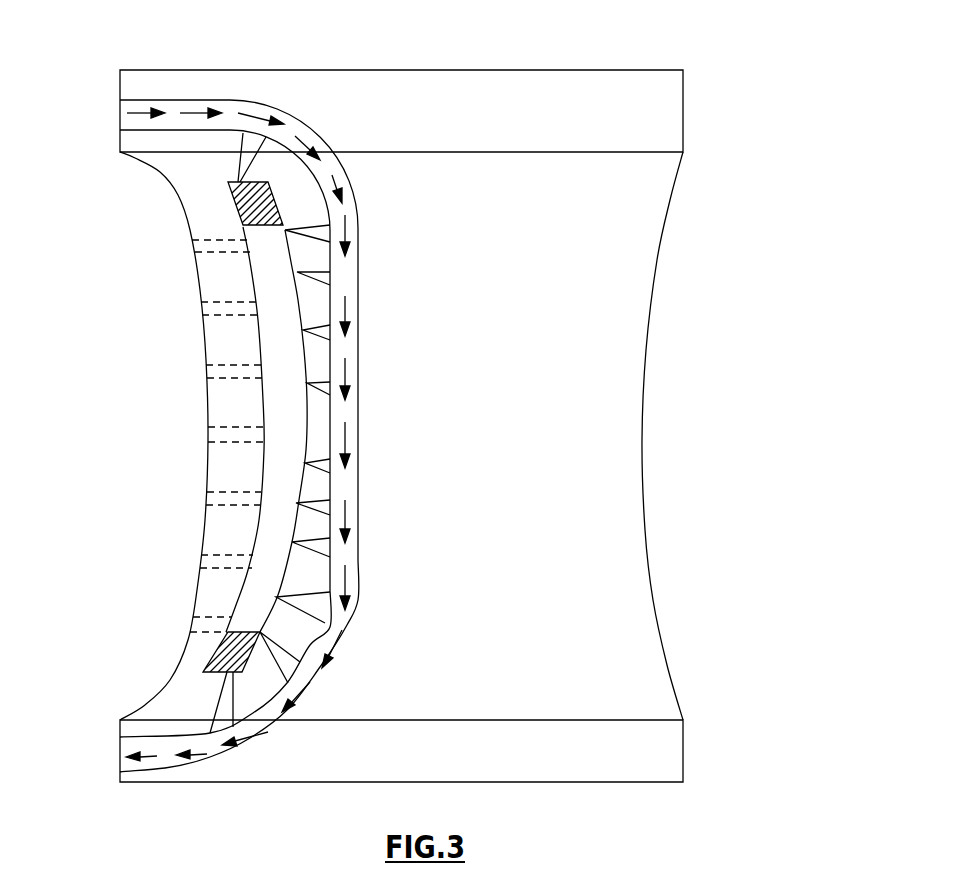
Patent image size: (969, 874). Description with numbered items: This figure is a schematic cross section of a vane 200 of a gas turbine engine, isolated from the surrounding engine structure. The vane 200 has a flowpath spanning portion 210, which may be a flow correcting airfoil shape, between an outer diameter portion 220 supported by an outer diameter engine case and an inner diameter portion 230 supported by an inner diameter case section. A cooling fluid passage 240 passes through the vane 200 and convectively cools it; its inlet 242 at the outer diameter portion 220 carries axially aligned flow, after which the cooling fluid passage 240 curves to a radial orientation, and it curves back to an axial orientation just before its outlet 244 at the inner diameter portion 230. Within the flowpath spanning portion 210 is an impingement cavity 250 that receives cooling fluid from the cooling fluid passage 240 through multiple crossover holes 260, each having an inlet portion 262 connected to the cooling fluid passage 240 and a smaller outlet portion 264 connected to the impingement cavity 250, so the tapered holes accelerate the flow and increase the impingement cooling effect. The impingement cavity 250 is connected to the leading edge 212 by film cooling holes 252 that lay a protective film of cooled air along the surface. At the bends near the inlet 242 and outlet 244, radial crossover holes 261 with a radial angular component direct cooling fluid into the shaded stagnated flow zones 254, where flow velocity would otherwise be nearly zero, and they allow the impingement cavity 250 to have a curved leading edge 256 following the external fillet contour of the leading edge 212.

The vane 200 is at (782, 77).
The flowpath spanning portion 210 is at (630, 445).
The leading edge 212 is at (183, 220).
The outer diameter portion 220 is at (447, 125).
The inner diameter portion 230 is at (447, 763).
The cooling fluid passage 240 is at (279, 436).
The inlet 242 is at (120, 105).
The outlet 244 is at (120, 760).
The impingement cavity 250 is at (227, 429).
The film cooling holes 252 is at (235, 364).
The stagnated flow zones 254 is at (228, 205).
The curved leading edge 256 is at (266, 403).
The crossover holes 260 is at (298, 593).
The radial crossover holes 261 is at (245, 140).
The inlet portion 262 is at (330, 505).
The outlet portion 264 is at (297, 500).